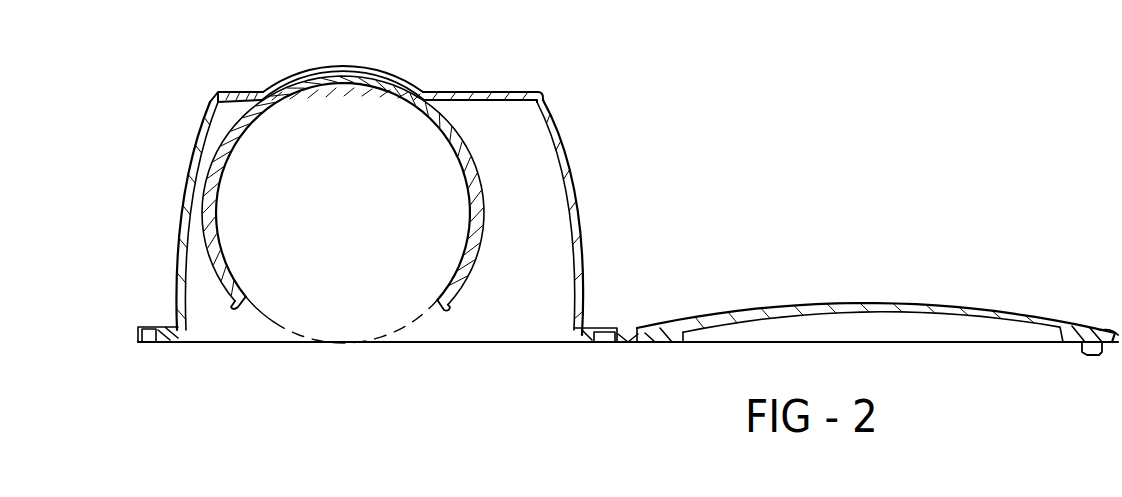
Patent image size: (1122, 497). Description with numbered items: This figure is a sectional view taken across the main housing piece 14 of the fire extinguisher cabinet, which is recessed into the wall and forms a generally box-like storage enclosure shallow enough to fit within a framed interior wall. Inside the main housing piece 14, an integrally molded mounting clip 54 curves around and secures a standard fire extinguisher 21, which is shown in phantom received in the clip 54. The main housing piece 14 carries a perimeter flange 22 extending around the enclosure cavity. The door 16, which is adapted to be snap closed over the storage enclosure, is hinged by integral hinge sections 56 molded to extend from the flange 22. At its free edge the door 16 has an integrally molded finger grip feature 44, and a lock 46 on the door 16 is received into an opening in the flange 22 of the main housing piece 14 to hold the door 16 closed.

The main housing piece 14 is at (306, 76).
The mounting clip 54 is at (222, 149).
The fire extinguisher 21 is at (248, 357).
The perimeter flange 22 is at (580, 346).
The hinge sections 56 is at (630, 341).
The door 16 is at (797, 307).
The finger grip feature 44 is at (1120, 332).
The lock 46 is at (1090, 357).